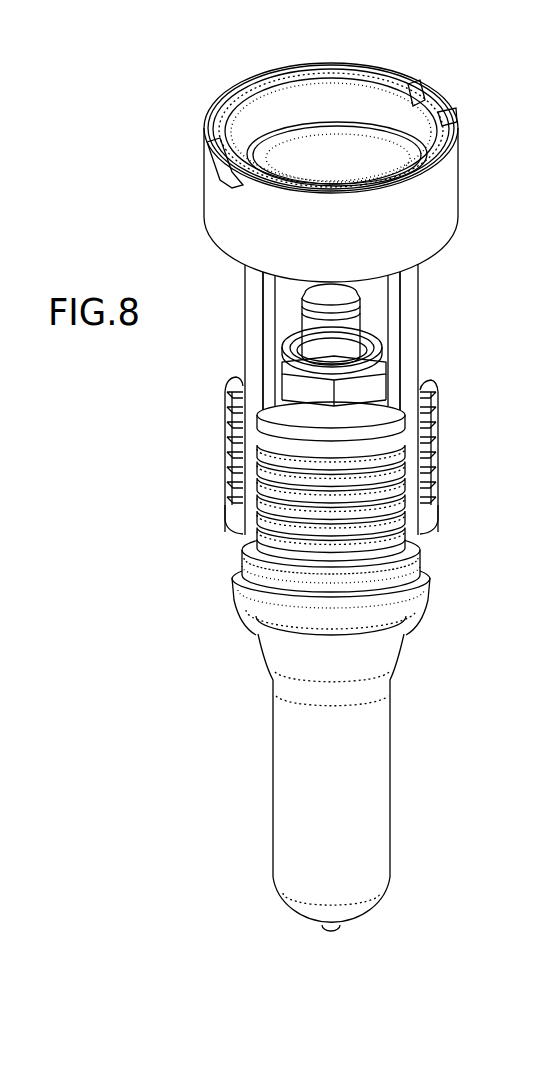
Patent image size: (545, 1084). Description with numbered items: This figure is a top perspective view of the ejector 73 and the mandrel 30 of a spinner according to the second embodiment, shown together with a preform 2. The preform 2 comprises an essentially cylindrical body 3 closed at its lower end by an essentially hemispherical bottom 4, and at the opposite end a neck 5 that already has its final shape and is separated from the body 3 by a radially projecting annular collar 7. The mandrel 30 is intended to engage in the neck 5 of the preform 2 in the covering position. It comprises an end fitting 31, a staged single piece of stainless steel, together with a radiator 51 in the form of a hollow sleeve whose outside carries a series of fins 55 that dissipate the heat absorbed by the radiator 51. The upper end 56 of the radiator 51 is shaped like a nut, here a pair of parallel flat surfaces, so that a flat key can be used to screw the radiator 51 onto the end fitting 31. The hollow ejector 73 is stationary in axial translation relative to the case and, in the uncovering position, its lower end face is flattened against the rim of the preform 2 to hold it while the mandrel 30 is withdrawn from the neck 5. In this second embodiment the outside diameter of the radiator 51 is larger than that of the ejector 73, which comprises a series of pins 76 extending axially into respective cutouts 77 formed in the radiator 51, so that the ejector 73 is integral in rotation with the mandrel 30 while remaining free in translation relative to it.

The preform 2 is at (351, 788).
The body 3 is at (382, 803).
The bottom 4 is at (365, 907).
The neck 5 is at (421, 563).
The annular collar 7 is at (421, 602).
The mandrel 30 is at (446, 397).
The end fitting 31 is at (305, 333).
The radiator 51 is at (220, 410).
The fins 55 is at (407, 464).
The upper end 56 is at (347, 390).
The ejector 73 is at (426, 302).
The pins 76 is at (253, 377).
The cutouts 77 is at (238, 512).